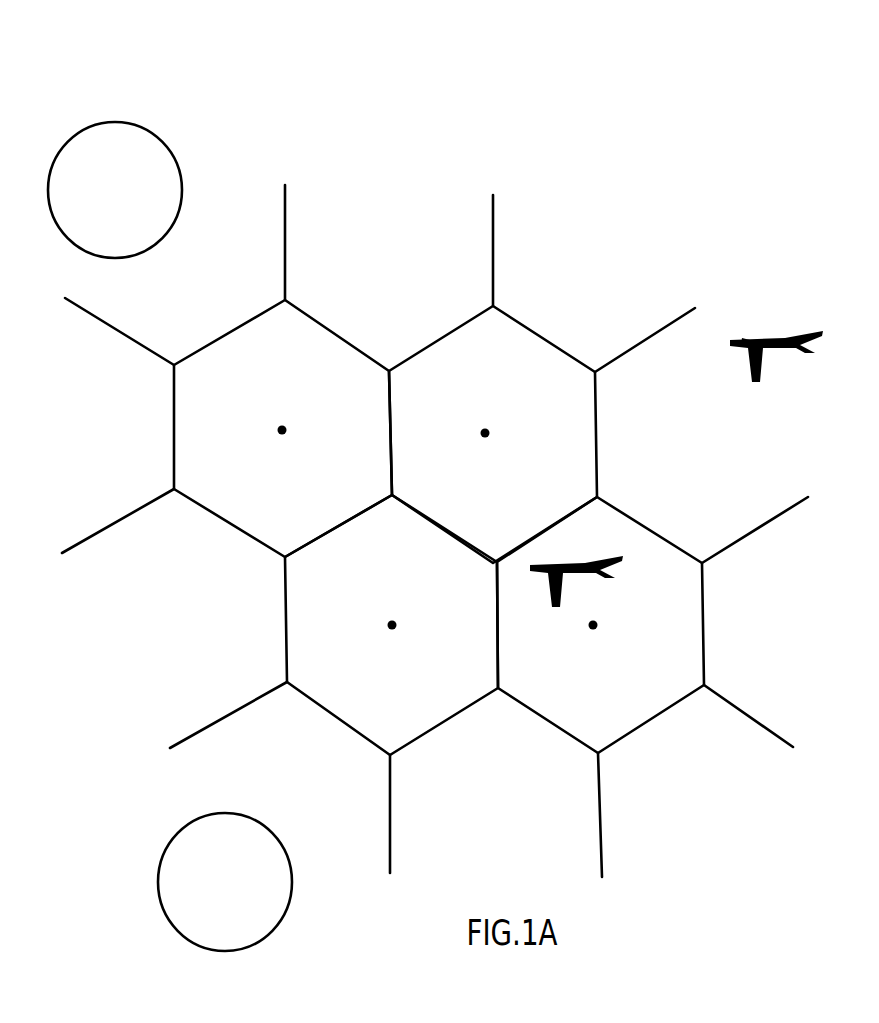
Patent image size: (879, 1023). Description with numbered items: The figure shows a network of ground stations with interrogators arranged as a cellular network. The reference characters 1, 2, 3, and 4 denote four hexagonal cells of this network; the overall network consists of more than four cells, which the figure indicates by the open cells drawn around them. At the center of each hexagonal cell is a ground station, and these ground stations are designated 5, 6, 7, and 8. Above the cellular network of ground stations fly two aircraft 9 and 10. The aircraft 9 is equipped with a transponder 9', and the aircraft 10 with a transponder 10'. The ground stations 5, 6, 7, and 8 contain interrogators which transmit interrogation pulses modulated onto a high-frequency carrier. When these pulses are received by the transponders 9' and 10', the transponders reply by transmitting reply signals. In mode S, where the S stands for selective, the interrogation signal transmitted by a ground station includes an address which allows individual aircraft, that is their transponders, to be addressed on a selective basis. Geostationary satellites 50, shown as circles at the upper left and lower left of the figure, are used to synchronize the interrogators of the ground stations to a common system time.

The hexagonal cell 1 is at (307, 327).
The hexagonal cell 2 is at (537, 355).
The hexagonal cell 3 is at (428, 707).
The hexagonal cell 4 is at (672, 573).
The ground station 5 is at (292, 412).
The ground station 6 is at (496, 419).
The ground station 7 is at (402, 635).
The ground station 8 is at (604, 635).
The aircraft 9 is at (568, 583).
The transponder 9' is at (585, 543).
The aircraft 10 is at (776, 366).
The transponder 10' is at (748, 302).
The geostationary satellite 50 is at (118, 117).